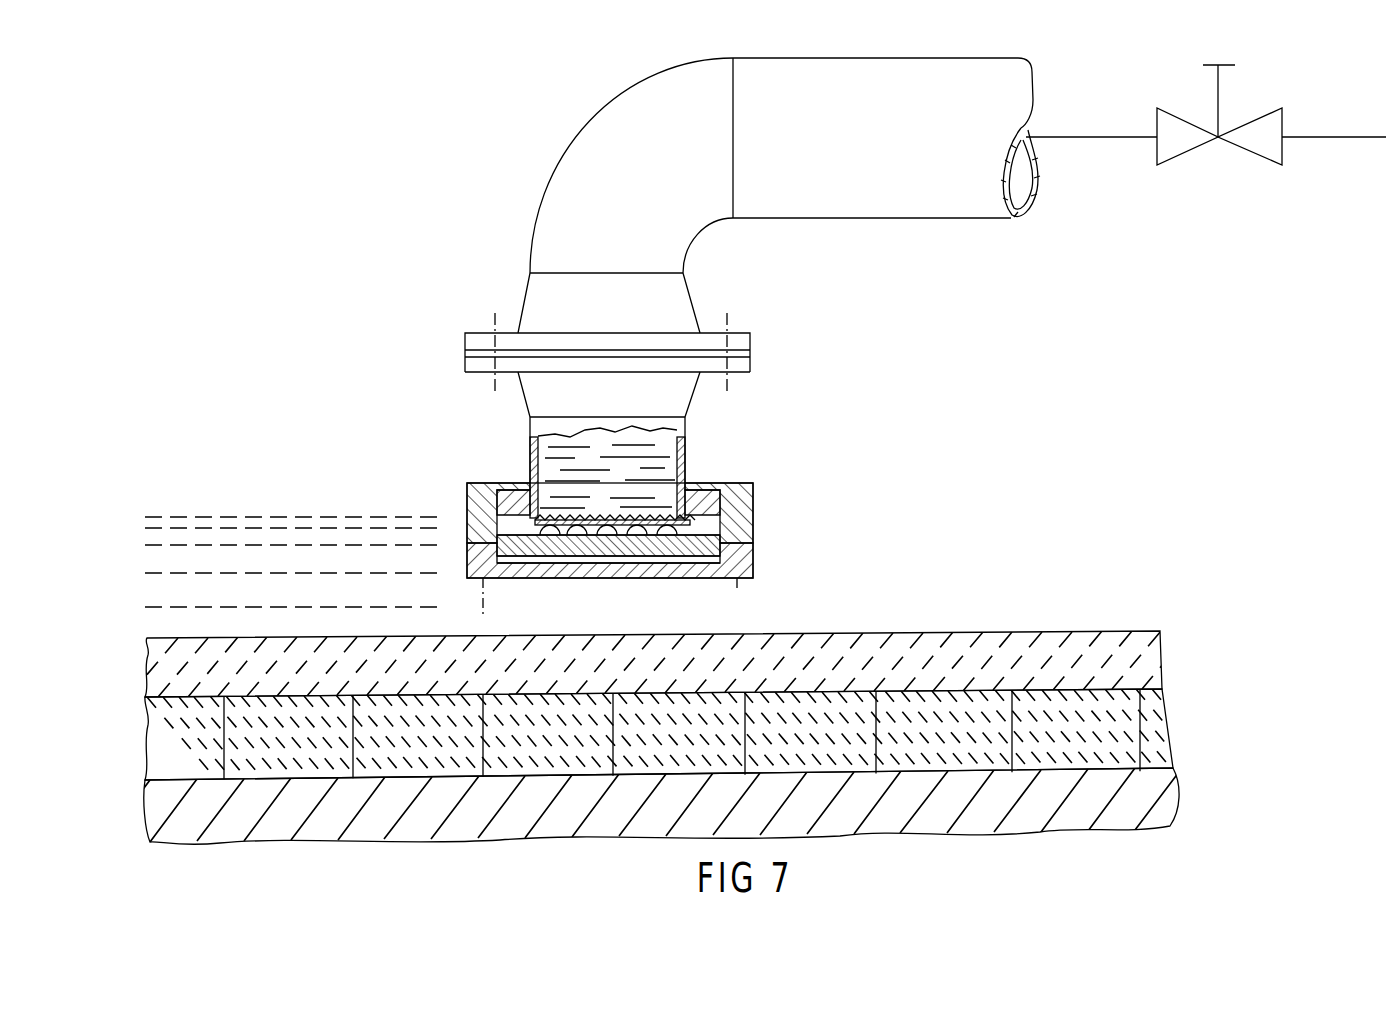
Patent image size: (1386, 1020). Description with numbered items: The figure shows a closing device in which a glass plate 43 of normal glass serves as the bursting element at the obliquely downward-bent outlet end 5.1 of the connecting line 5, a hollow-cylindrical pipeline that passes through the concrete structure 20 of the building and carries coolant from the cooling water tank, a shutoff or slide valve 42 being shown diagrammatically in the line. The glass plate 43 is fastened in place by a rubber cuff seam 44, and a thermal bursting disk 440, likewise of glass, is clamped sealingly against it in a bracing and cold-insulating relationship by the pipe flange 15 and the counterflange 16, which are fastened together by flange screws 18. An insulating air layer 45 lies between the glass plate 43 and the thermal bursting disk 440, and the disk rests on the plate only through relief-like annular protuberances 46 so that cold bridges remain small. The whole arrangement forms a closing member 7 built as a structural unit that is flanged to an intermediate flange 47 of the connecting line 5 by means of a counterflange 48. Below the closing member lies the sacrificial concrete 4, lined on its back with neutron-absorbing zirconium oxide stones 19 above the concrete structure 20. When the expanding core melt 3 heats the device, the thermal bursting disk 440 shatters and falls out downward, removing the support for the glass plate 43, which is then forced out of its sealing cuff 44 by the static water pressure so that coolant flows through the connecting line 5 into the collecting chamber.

The core melt 3 is at (250, 533).
The sacrificial concrete 4 is at (1068, 650).
The connecting line 5 is at (974, 218).
The outlet end 5.1 is at (530, 426).
The closing member 7 is at (772, 483).
The pipe flange 15 is at (755, 512).
The counterflange 16 is at (755, 557).
The flange screws 18 is at (485, 593).
The zirconium oxide stones 19 is at (1080, 742).
The concrete structure 20 is at (960, 795).
The shutoff or slide valve 42 is at (1237, 148).
The glass plate 43 is at (612, 525).
The rubber cuff seam 44 is at (500, 490).
The insulating air layer 45 is at (604, 530).
The annular protuberances 46 is at (565, 538).
The intermediate flange 47 is at (713, 333).
The counterflange 48 is at (752, 362).
The thermal bursting disk 440 is at (658, 558).